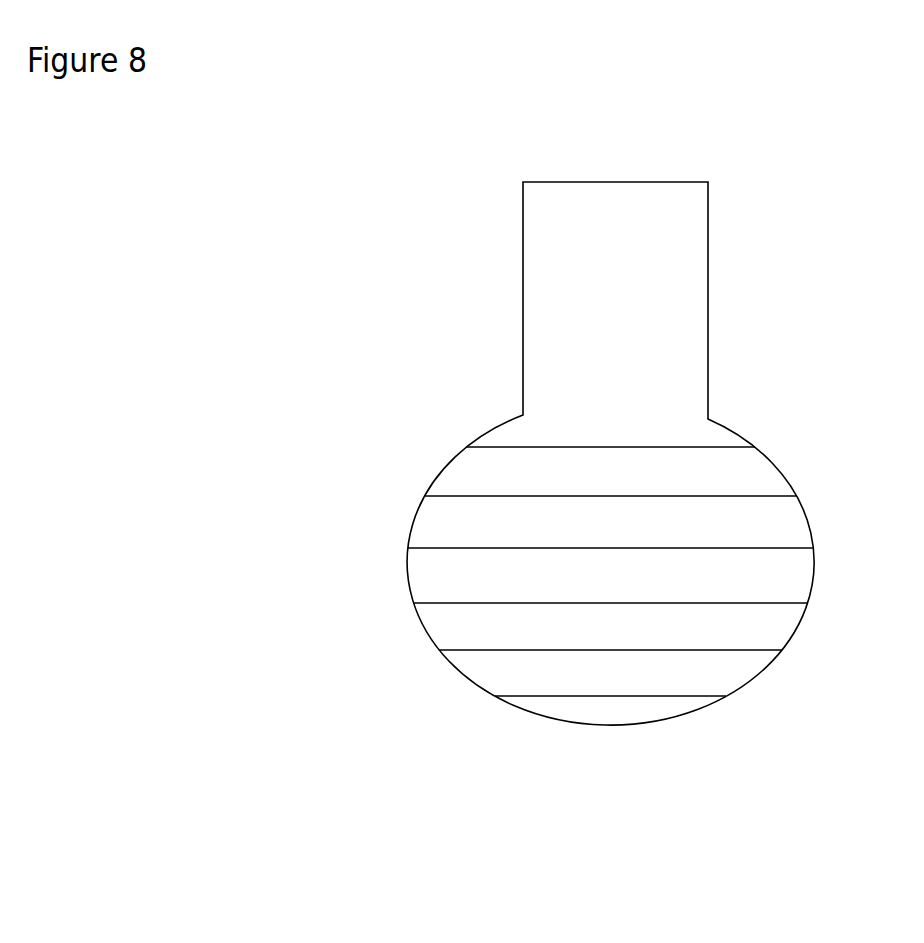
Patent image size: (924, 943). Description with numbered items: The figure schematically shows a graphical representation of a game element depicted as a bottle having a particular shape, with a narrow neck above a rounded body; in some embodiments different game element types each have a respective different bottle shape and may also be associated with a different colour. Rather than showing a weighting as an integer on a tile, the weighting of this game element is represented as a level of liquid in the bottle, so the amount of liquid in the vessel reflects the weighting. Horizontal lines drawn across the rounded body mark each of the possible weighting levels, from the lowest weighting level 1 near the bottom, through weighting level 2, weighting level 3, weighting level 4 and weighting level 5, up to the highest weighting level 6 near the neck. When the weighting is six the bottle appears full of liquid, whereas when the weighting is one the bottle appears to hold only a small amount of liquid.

The weighting level 1 is at (683, 697).
The weighting level 2 is at (743, 650).
The weighting level 3 is at (790, 603).
The weighting level 4 is at (783, 548).
The weighting level 5 is at (750, 495).
The weighting level 6 is at (712, 448).